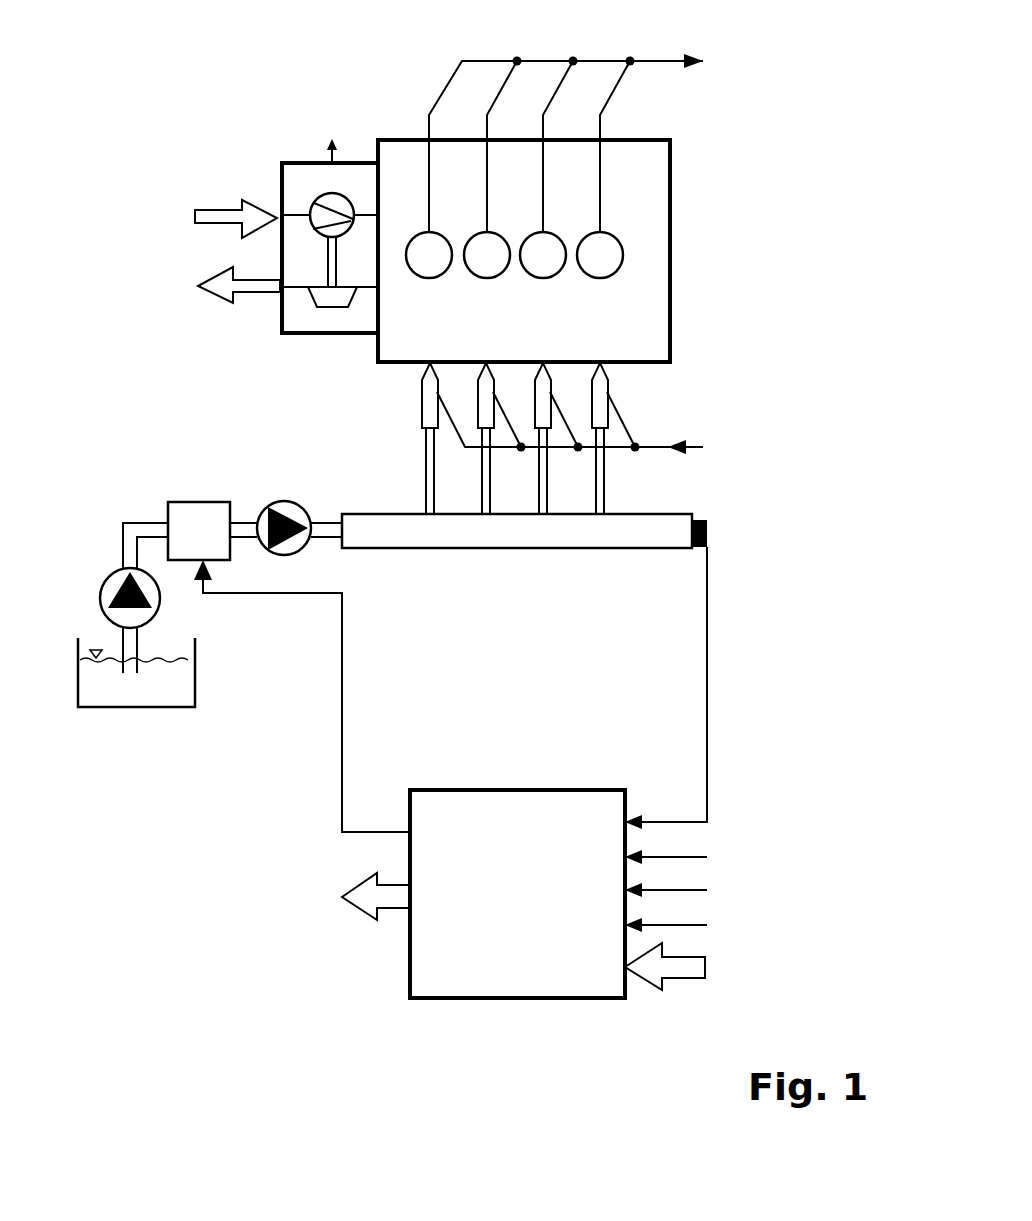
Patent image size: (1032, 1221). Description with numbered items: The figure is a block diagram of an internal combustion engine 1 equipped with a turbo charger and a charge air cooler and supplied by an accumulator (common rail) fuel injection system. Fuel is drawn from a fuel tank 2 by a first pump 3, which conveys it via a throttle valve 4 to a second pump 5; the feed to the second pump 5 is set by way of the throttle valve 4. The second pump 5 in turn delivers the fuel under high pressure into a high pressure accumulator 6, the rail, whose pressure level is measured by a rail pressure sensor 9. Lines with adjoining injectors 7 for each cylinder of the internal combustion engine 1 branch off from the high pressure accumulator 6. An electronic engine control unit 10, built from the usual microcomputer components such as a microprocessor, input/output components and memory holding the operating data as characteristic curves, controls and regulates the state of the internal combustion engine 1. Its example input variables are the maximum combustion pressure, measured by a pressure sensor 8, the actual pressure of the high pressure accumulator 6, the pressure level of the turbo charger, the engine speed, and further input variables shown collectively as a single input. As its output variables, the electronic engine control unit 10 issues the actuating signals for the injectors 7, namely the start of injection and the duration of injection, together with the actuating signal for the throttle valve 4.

The internal combustion engine 1 is at (360, 72).
The fuel tank 2 is at (182, 683).
The first pump 3 is at (105, 577).
The throttle valve 4 is at (208, 547).
The second pump 5 is at (290, 500).
The high pressure accumulator 6 is at (480, 543).
The injectors 7 is at (428, 397).
The pressure sensor 8 is at (609, 269).
The rail pressure sensor 9 is at (708, 530).
The electronic engine control unit 10 is at (614, 978).